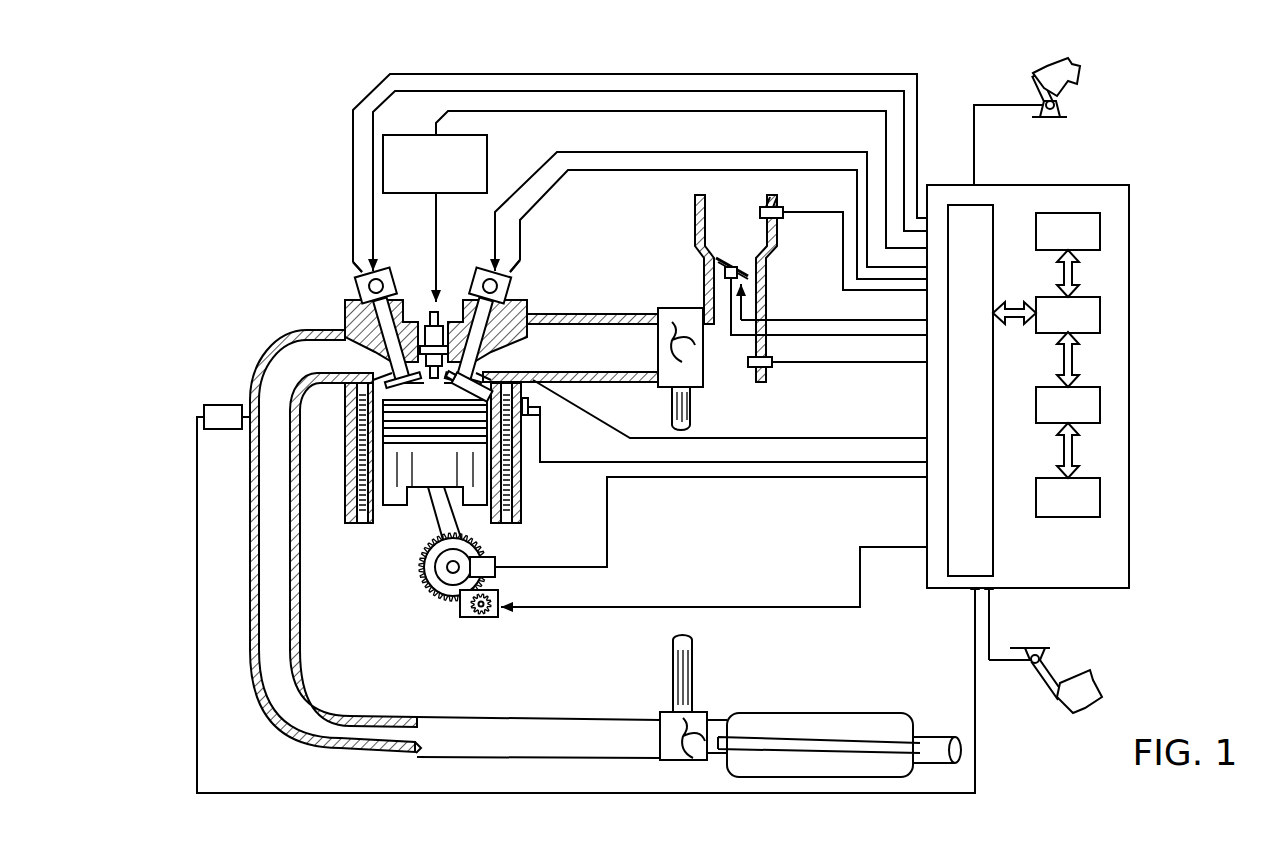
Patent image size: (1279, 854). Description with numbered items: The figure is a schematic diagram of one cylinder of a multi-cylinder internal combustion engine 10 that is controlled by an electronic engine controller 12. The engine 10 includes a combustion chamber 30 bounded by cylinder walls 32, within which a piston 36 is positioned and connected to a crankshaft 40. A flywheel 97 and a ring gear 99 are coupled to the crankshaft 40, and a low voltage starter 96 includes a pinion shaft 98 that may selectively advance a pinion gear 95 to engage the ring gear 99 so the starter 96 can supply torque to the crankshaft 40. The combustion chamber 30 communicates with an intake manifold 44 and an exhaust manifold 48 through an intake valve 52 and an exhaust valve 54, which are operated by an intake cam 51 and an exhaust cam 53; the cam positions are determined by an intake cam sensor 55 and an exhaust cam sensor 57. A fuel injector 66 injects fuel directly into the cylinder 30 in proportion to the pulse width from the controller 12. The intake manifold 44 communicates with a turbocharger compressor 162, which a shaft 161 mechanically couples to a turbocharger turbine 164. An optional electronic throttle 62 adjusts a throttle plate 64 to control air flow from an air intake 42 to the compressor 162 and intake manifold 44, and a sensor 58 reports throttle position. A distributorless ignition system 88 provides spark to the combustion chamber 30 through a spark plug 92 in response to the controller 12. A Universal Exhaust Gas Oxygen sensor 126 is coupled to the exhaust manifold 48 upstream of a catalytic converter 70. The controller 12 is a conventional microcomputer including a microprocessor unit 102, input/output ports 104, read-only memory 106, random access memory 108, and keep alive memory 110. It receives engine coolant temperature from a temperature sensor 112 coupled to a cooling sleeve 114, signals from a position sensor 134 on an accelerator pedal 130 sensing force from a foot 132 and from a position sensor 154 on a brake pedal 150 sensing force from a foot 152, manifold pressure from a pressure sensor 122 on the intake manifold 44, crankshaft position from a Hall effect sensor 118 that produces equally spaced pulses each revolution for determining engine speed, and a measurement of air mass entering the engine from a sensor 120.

The internal combustion engine 10 is at (290, 262).
The electronic engine controller 12 is at (1128, 188).
The combustion chamber 30 is at (433, 385).
The cylinder walls 32 is at (378, 512).
The piston 36 is at (420, 478).
The crankshaft 40 is at (445, 592).
The air intake 42 is at (747, 237).
The intake manifold 44 is at (605, 357).
The exhaust manifold 48 is at (328, 364).
The intake cam 51 is at (486, 275).
The intake valve 52 is at (470, 362).
The exhaust cam 53 is at (385, 275).
The exhaust valve 54 is at (400, 360).
The intake cam sensor 55 is at (513, 278).
The exhaust cam sensor 57 is at (355, 288).
The throttle position sensor 58 is at (724, 278).
The electronic throttle 62 is at (755, 268).
The throttle plate 64 is at (720, 264).
The fuel injector 66 is at (530, 384).
The catalytic converter 70 is at (768, 713).
The distributorless ignition system 88 is at (397, 135).
The spark plug 92 is at (437, 312).
The pinion gear 95 is at (486, 618).
The starter 96 is at (498, 614).
The flywheel 97 is at (430, 575).
The pinion shaft 98 is at (476, 612).
The ring gear 99 is at (450, 600).
The microprocessor unit 102 is at (1100, 312).
The input/output ports 104 is at (993, 212).
The read-only memory 106 is at (1100, 228).
The random access memory 108 is at (1100, 404).
The keep alive memory 110 is at (1100, 498).
The temperature sensor 112 is at (537, 418).
The cooling sleeve 114 is at (522, 478).
The Hall effect sensor 118 is at (496, 560).
The air mass sensor 120 is at (780, 208).
The pressure sensor 122 is at (772, 367).
The Universal Exhaust Gas Oxygen sensor 126 is at (204, 414).
The accelerator pedal 130 is at (1040, 83).
The foot 132 is at (1080, 72).
The position sensor 134 is at (1070, 110).
The brake pedal 150 is at (1058, 702).
The foot 152 is at (1082, 684).
The position sensor 154 is at (1030, 656).
The shaft 161 is at (672, 400).
The turbocharger compressor 162 is at (660, 308).
The turbocharger turbine 164 is at (665, 712).